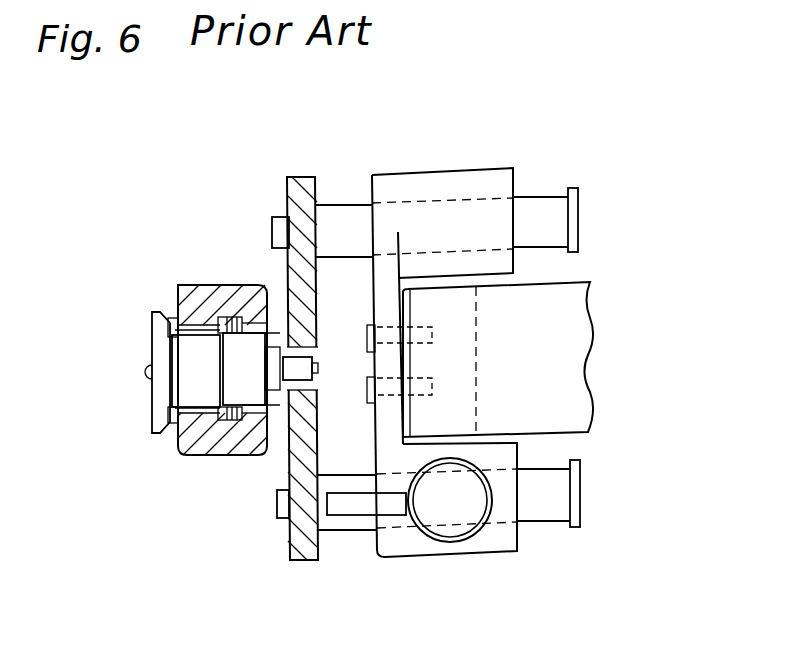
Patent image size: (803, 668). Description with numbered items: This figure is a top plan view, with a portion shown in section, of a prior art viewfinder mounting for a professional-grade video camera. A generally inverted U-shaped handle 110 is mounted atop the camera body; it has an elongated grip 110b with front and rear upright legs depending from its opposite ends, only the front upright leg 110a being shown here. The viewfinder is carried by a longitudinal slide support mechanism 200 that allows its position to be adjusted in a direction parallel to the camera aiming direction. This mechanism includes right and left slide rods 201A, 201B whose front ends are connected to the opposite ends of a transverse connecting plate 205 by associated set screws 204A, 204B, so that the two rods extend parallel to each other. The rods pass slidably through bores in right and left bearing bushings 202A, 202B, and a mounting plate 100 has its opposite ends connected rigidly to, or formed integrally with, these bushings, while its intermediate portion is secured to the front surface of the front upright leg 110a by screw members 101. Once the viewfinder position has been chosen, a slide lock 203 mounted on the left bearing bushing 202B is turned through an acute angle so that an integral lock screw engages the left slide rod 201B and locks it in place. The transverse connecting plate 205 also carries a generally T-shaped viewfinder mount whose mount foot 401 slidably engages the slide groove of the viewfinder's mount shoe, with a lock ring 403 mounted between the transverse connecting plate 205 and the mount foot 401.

The mounting plate 100 is at (388, 313).
The screw members 101 is at (503, 377).
The handle 110 is at (570, 404).
The front upright leg 110a is at (457, 342).
The grip 110b is at (552, 418).
The longitudinal slide support mechanism 200 is at (340, 198).
The right slide rod 201A is at (543, 222).
The left slide rod 201B is at (560, 492).
The right bearing bushing 202A is at (473, 180).
The left bearing bushing 202B is at (418, 556).
The slide lock 203 is at (458, 507).
The set screw 204A is at (275, 217).
The set screw 204B is at (280, 518).
The transverse connecting plate 205 is at (307, 560).
The mount foot 401 is at (160, 407).
The lock ring 403 is at (193, 311).